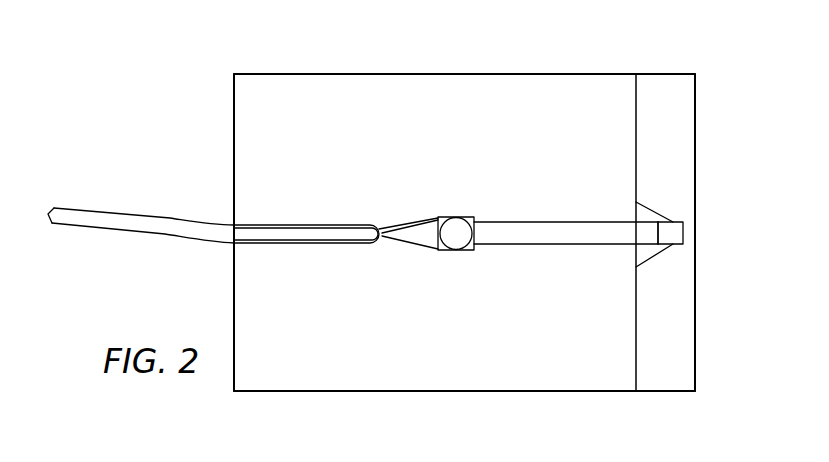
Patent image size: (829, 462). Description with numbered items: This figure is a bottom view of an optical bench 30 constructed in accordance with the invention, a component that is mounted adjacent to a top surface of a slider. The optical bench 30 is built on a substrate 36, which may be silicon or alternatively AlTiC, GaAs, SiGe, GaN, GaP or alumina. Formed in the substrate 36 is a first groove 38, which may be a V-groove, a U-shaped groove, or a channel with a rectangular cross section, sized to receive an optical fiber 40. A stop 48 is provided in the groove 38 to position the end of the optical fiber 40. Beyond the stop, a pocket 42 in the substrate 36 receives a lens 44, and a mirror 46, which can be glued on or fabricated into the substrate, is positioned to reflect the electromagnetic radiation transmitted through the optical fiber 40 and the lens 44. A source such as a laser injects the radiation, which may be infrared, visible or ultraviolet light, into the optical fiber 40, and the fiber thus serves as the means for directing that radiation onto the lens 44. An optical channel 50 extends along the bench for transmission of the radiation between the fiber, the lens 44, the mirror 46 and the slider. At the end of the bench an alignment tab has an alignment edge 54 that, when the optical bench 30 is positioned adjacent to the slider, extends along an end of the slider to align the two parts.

The optical bench 30 is at (586, 63).
The substrate 36 is at (243, 133).
The first groove 38 is at (308, 245).
The optical fiber 40 is at (163, 238).
The pocket 42 is at (474, 250).
The lens 44 is at (455, 246).
The mirror 46 is at (686, 235).
The stop 48 is at (380, 250).
The optical channel 50 is at (543, 241).
The alignment edge 54 is at (682, 342).